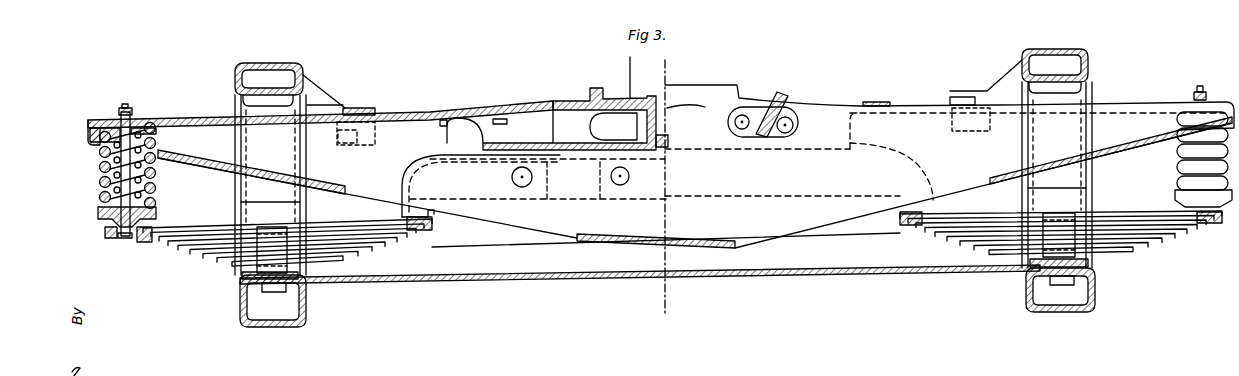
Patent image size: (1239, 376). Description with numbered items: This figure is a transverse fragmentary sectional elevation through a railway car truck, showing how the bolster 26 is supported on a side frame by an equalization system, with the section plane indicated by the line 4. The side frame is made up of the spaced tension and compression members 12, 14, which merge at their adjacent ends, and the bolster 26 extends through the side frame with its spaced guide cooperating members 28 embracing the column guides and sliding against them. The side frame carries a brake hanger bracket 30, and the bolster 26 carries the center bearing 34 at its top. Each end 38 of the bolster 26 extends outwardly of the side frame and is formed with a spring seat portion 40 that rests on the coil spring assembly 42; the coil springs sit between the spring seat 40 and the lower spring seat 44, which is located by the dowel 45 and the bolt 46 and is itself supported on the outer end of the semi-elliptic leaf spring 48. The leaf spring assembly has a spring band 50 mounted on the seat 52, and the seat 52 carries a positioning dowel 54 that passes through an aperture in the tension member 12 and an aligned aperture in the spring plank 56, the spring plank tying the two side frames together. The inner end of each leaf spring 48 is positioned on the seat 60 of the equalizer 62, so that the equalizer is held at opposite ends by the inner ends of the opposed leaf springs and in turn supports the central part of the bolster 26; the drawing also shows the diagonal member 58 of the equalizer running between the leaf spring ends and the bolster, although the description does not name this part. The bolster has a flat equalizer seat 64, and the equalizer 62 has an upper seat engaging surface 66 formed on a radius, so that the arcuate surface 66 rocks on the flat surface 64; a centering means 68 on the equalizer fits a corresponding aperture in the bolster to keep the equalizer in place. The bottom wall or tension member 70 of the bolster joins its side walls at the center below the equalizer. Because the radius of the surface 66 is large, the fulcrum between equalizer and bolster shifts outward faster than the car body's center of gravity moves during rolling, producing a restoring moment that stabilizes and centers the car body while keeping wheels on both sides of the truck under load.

The section line 4- 4 is at (646, 68).
The tension member 12 is at (292, 327).
The compression member 14 is at (268, 63).
The bolster 26 is at (826, 212).
The guide cooperating members 28 is at (1085, 130).
The brake hanger bracket 30 is at (360, 108).
The center bearing 34 is at (618, 70).
The bolster end 38 is at (198, 117).
The spring seat portion 40 is at (143, 126).
The coil spring assembly 42 is at (99, 177).
The spring seat 44 is at (110, 222).
The dowel 45 is at (113, 240).
The bolt 46 is at (126, 104).
The semi-elliptic leaf spring 48 is at (205, 258).
The spring band 50 is at (278, 262).
The seat 52 is at (241, 278).
The positioning dowel 54 is at (275, 292).
The spring plank 56 is at (490, 284).
The diagonal strut 58 is at (568, 243).
The seat 60 is at (416, 232).
The equalizer 62 is at (588, 185).
The equalizer seat 64 is at (635, 140).
The upper seat engaging surface 66 is at (563, 158).
The centering means 68 is at (668, 128).
The bottom wall or tension member 70 is at (655, 250).